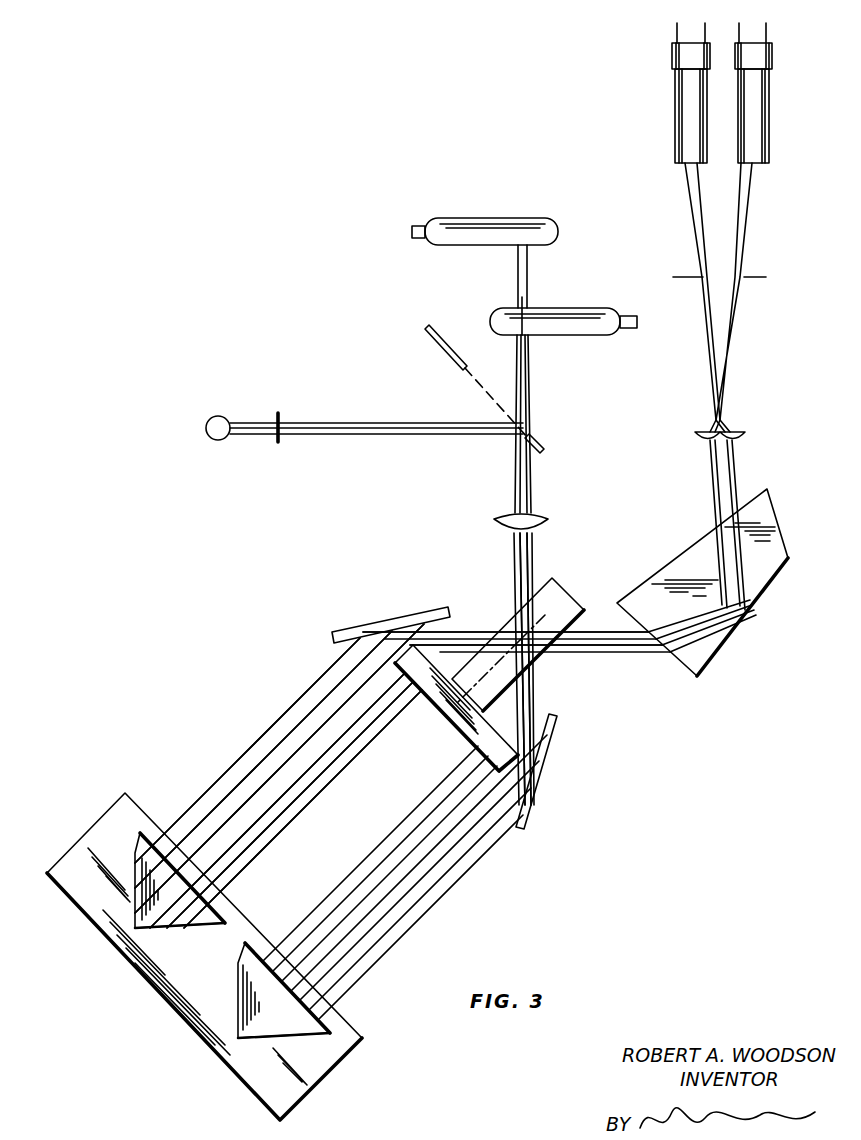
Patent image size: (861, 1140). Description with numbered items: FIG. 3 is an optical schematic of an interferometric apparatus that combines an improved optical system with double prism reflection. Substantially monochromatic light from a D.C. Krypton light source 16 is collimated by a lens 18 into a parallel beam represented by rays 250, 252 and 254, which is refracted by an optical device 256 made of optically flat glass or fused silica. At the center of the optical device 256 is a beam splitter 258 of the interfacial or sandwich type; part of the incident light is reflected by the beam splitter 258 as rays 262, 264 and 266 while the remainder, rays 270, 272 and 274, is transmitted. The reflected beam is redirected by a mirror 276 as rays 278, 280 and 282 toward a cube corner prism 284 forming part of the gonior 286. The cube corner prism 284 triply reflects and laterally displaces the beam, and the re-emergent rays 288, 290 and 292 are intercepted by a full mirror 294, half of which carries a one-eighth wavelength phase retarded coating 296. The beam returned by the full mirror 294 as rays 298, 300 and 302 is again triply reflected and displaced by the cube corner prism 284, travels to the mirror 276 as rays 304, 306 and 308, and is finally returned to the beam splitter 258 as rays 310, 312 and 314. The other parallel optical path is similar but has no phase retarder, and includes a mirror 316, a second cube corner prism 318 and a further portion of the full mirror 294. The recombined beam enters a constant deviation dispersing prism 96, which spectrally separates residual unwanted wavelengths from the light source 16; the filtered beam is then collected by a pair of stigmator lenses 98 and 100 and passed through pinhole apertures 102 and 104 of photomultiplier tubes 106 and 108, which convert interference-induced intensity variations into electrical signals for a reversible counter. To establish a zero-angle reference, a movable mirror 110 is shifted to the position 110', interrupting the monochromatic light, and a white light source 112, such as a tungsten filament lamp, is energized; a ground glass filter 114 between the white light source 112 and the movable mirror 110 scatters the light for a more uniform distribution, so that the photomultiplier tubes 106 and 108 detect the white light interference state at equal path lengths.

The light source 16 is at (581, 308).
The lens 18 is at (545, 514).
The constant deviation dispersing prism 96 is at (692, 617).
The stigmator lens 98 is at (694, 436).
The stigmator lens 100 is at (746, 436).
The pinhole aperture 102 is at (699, 276).
The pinhole aperture 104 is at (752, 276).
The photomultiplier tube 106 is at (672, 104).
The photomultiplier tube 108 is at (770, 110).
The movable mirror 110 is at (430, 347).
The mirror position 110' is at (560, 439).
The white light source 112 is at (218, 440).
The ground glass filter 114 is at (283, 418).
The ray 250 is at (497, 669).
The ray 252 is at (502, 669).
The ray 254 is at (546, 669).
The optical device 256 is at (548, 622).
The beam splitter 258 is at (572, 603).
The ray 262 is at (472, 653).
The ray 264 is at (472, 645).
The ray 266 is at (490, 630).
The ray 270 is at (536, 677).
The ray 272 is at (531, 692).
The ray 274 is at (525, 705).
The mirror 276 is at (393, 617).
The ray 278 is at (343, 652).
The ray 280 is at (346, 672).
The ray 282 is at (344, 698).
The cube corner prism 284 is at (205, 921).
The gonior 286 is at (268, 1074).
The ray 288 is at (338, 748).
The ray 290 is at (336, 766).
The ray 292 is at (334, 786).
The full mirror 294 is at (468, 737).
The phase retarded coating 296 is at (404, 681).
The ray 298 is at (276, 808).
The ray 300 is at (272, 828).
The ray 302 is at (268, 850).
The ray 304 is at (268, 730).
The ray 306 is at (265, 757).
The ray 308 is at (263, 783).
The ray 310 is at (443, 642).
The ray 312 is at (458, 630).
The ray 314 is at (470, 637).
The mirror 316 is at (526, 815).
The cube corner prism 318 is at (305, 1032).